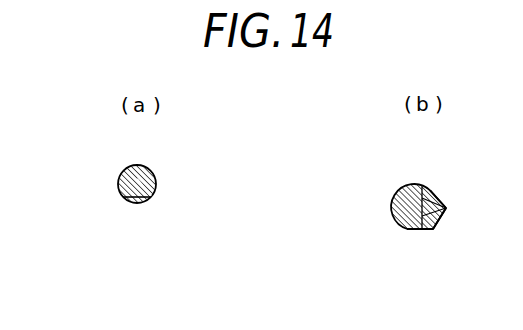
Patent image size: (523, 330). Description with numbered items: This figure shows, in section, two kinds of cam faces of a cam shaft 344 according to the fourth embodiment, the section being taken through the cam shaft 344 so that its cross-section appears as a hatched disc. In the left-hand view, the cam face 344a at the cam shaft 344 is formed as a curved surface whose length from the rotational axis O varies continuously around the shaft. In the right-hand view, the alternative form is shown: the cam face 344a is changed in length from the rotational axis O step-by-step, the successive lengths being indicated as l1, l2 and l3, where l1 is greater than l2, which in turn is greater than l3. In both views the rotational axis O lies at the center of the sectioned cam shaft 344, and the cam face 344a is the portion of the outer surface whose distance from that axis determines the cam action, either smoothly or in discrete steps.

The cam shaft 344 is at (119, 181).
The cam face 344a is at (136, 199).
The rotational axis O is at (153, 172).
The first step length l1 is at (431, 230).
The second step length l2 is at (446, 208).
The third step length l3 is at (431, 189).